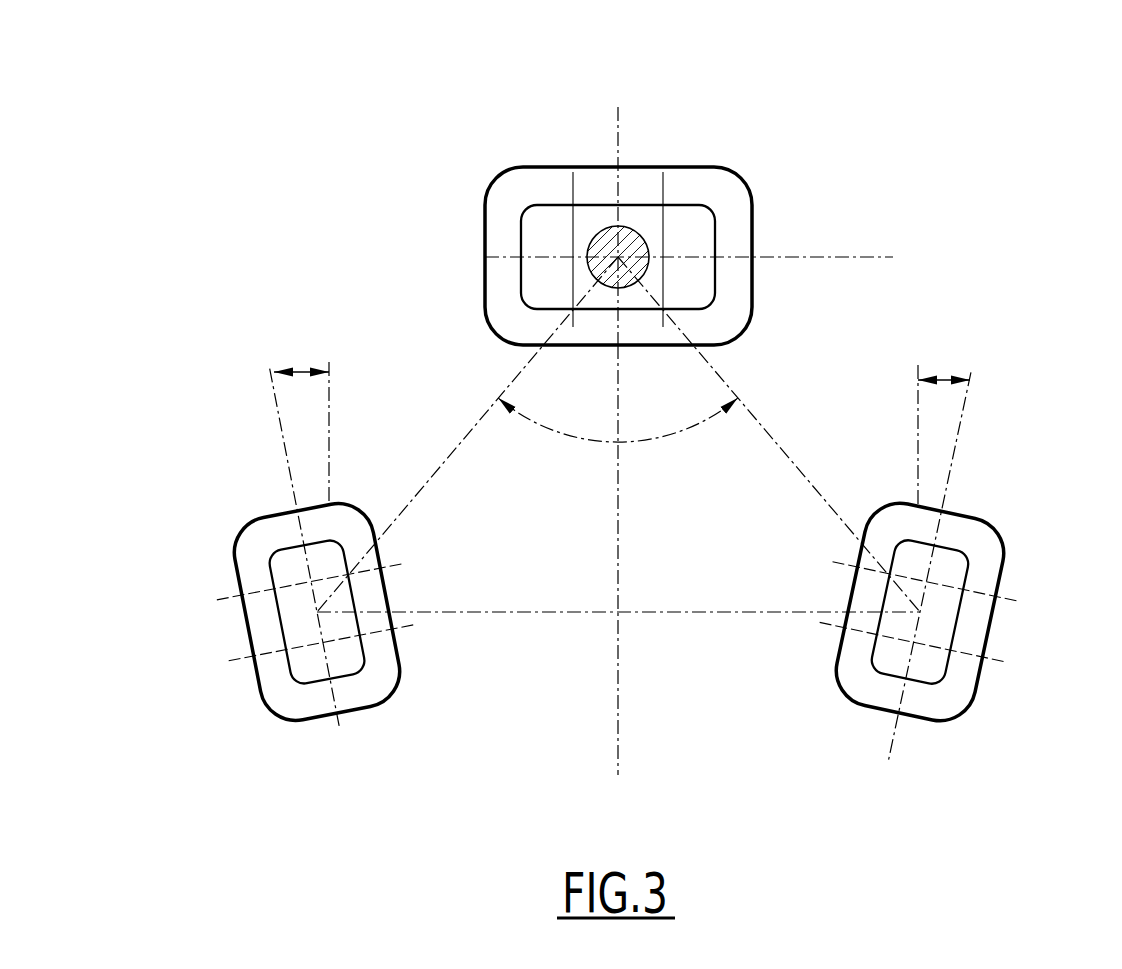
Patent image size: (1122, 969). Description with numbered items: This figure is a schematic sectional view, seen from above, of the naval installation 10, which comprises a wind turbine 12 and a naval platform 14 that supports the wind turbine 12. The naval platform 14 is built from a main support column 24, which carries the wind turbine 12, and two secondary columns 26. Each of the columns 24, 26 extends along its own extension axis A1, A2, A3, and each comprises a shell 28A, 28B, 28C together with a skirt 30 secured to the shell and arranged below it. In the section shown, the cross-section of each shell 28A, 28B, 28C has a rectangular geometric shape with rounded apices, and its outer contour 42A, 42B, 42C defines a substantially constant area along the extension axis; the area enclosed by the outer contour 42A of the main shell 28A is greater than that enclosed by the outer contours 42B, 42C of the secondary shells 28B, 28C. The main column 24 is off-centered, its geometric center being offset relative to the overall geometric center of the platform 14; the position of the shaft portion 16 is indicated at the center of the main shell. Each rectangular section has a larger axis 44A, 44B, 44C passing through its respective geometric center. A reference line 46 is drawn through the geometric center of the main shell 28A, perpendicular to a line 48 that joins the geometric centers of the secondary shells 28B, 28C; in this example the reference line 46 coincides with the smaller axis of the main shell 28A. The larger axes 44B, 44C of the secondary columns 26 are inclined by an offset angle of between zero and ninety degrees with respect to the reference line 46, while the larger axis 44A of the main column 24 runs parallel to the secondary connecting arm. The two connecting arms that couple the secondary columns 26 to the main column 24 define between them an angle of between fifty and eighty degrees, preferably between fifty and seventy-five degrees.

The gear train / transmission assembly 10 is at (950, 135).
The wind turbine 12 is at (643, 233).
The naval platform 14 is at (866, 367).
The shaft section 16 is at (647, 273).
The main support column 24 is at (483, 155).
The secondary column 26 is at (283, 742).
The shell of the main column 28A is at (596, 312).
The shell of a secondary column 28B is at (367, 668).
The shell of the other secondary column 28C is at (953, 667).
The skirt 30 is at (483, 243).
The outer contour of the main column shell cross-section 42A is at (716, 235).
The outer contour of a secondary column shell cross-section 42B is at (278, 620).
The outer contour of the other secondary column shell cross-section 42C is at (960, 623).
The larger axis of the main column shell 44A is at (858, 259).
The larger axis of a secondary column shell 44B is at (292, 480).
The larger axis of the other secondary column shell 44C is at (958, 433).
The reference line 46 is at (618, 687).
The line passing through the geometric centers of the secondary shells 48 is at (500, 614).
The extension axis of the main column A1 is at (618, 257).
The extension axis of a secondary column A2 is at (317, 612).
The extension axis of the other secondary column A3 is at (920, 612).